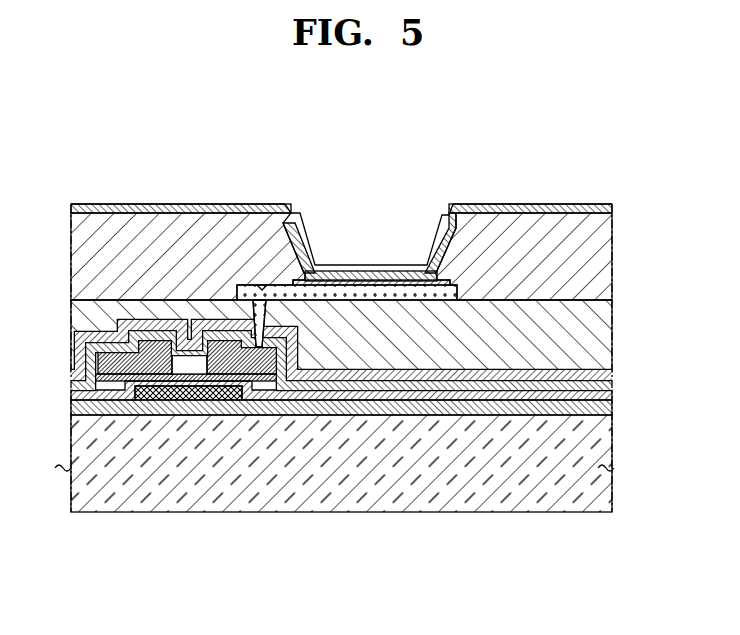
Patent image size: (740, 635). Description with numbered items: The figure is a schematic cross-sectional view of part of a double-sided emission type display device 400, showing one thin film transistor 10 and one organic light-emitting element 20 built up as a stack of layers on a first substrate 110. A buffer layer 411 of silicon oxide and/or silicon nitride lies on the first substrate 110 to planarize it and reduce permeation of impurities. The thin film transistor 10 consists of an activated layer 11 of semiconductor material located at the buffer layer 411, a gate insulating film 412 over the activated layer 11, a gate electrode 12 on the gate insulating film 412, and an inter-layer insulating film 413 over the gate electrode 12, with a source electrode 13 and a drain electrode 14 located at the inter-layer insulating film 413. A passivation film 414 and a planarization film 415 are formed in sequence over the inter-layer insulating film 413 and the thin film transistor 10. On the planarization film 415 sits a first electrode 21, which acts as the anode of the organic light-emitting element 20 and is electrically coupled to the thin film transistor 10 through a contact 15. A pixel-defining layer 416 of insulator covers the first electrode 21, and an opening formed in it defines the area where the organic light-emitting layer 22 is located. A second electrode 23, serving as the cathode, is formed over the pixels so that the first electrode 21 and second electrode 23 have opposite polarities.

The double-sided emission type display device 400 is at (356, 343).
The first substrate 110 is at (612, 497).
The buffer layer 411 is at (605, 409).
The gate insulating film 412 is at (612, 397).
The inter-layer insulating film 413 is at (612, 386).
The passivation film 414 is at (612, 373).
The planarization film 415 is at (612, 318).
The pixel-defining layer 416 is at (612, 259).
The thin film transistor 10 is at (187, 464).
The activated layer 11 is at (190, 381).
The gate electrode 12 is at (175, 397).
The source electrode 13 is at (107, 376).
The drain electrode 14 is at (268, 376).
The pixel electrode 15 is at (240, 302).
The organic light-emitting element 20 is at (341, 202).
The first electrode 21 is at (433, 162).
The organic light-emitting layer 22 is at (375, 277).
The second electrode 23 is at (407, 265).